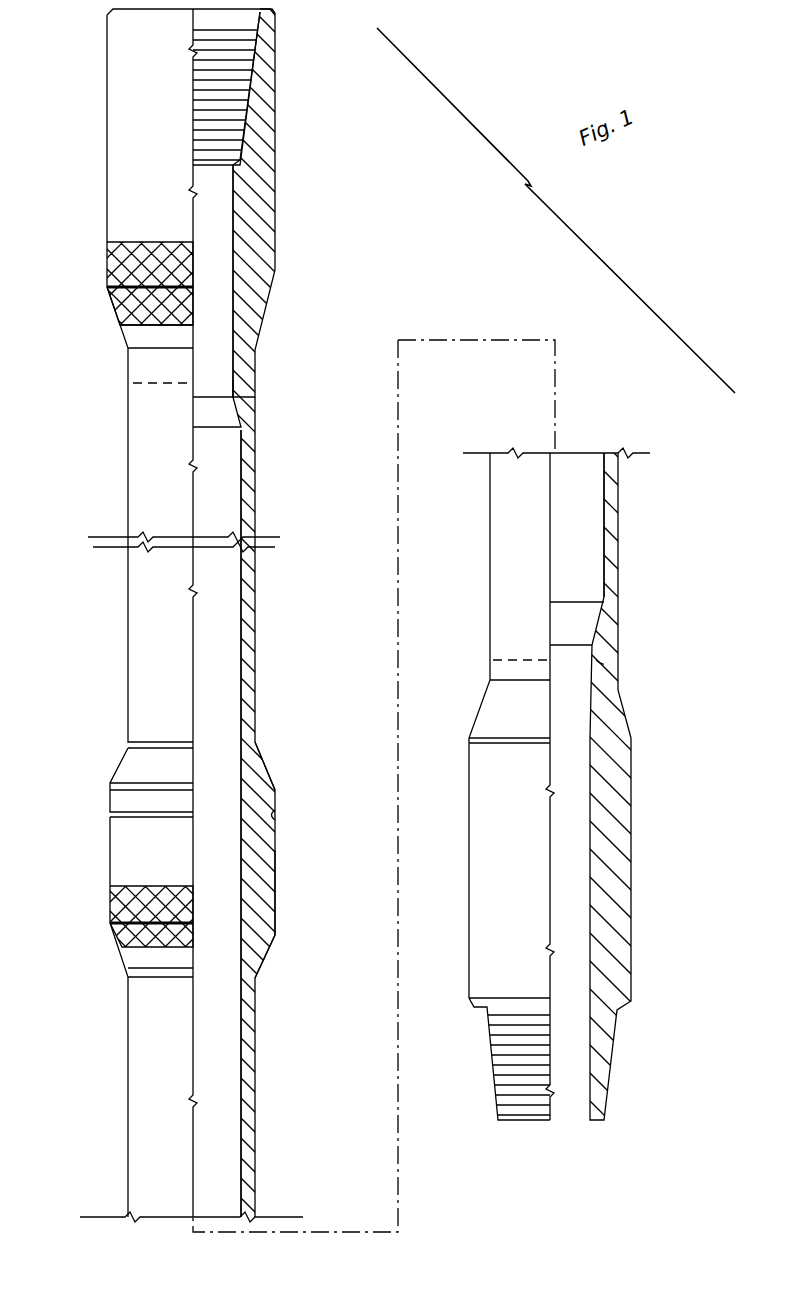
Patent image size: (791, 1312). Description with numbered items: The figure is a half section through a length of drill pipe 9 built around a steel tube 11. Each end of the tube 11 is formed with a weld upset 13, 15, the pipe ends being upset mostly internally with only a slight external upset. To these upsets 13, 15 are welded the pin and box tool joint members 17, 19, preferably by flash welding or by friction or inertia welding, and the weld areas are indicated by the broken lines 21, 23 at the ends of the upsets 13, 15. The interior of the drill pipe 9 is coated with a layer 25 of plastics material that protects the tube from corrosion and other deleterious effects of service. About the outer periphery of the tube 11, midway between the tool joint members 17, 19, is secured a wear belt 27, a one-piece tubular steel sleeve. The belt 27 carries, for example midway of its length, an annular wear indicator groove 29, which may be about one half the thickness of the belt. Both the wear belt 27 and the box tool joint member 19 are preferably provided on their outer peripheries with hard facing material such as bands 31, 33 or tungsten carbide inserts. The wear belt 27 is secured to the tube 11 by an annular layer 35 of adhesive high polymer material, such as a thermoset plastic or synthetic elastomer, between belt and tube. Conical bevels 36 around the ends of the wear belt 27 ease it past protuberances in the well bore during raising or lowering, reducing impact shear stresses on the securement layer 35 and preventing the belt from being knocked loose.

The drill pipe 9 is at (632, 496).
The tube 11 is at (250, 500).
The weld upset 13 is at (612, 630).
The weld upset 15 is at (246, 404).
The pin tool joint member 17 is at (620, 875).
The box tool joint member 19 is at (268, 195).
The weld area 21 is at (602, 663).
The weld area 23 is at (238, 385).
The layer of plastics material 25 is at (232, 225).
The wear belt 27 is at (277, 845).
The annular wear indicator groove 29 is at (279, 815).
The hard facing band 31 is at (107, 268).
The hard facing band 33 is at (110, 913).
The annular layer of adhesive high polymer material 35 is at (262, 868).
The conical bevel 36 is at (262, 770).